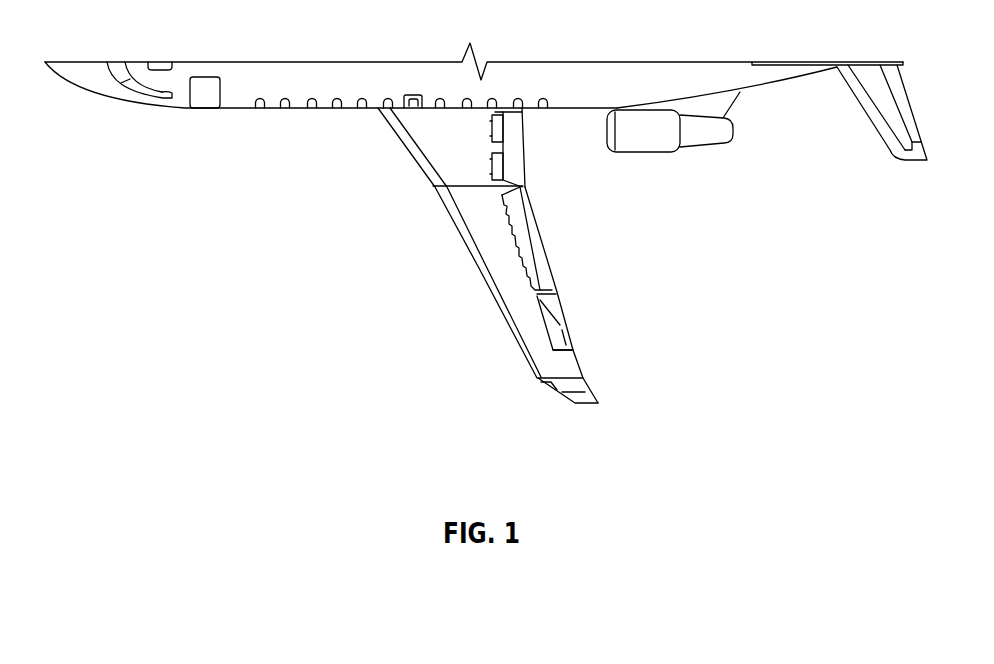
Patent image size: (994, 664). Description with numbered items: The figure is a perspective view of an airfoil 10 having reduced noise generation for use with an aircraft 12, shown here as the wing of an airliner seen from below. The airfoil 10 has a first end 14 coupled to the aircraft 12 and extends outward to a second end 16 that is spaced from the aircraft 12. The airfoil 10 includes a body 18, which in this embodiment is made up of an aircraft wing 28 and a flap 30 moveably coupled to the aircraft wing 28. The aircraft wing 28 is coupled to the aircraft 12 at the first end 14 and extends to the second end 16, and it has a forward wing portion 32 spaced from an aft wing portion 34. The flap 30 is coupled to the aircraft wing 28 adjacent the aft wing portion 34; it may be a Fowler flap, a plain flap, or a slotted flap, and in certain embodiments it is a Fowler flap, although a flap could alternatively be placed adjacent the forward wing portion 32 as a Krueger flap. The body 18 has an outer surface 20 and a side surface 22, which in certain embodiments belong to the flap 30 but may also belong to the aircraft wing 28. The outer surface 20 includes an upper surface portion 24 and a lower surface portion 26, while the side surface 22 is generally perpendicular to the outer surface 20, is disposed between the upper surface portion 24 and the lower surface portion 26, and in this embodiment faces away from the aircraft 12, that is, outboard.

The airfoil 10 is at (554, 208).
The aircraft 12 is at (229, 128).
The first end 14 is at (430, 110).
The second end 16 is at (587, 408).
The body 18 is at (563, 289).
The outer surface 20 is at (553, 315).
The side surface 22 is at (567, 357).
The upper surface portion 24 is at (563, 333).
The lower surface portion 26 is at (567, 347).
The aircraft wing 28 is at (529, 332).
The flap 30 is at (549, 304).
The forward wing portion 32 is at (514, 324).
The aft wing portion 34 is at (548, 260).